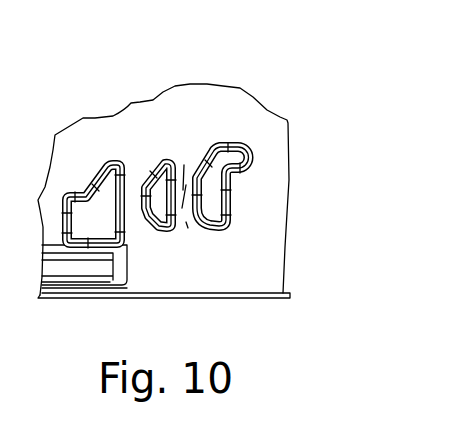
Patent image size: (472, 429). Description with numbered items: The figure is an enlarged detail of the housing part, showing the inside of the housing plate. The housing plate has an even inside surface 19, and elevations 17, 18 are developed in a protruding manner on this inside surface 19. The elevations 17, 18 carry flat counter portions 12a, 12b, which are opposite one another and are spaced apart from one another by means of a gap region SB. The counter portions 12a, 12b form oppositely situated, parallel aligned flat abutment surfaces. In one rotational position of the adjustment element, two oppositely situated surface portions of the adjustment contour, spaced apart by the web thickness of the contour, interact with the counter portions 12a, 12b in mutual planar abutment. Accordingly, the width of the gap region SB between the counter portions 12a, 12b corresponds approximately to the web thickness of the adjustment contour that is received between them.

The inside surface 19 is at (92, 138).
The elevation 18 is at (147, 162).
The elevation 17 is at (234, 144).
The counter portion 12a is at (182, 208).
The counter portion 12b is at (184, 165).
The gap region SB is at (192, 234).